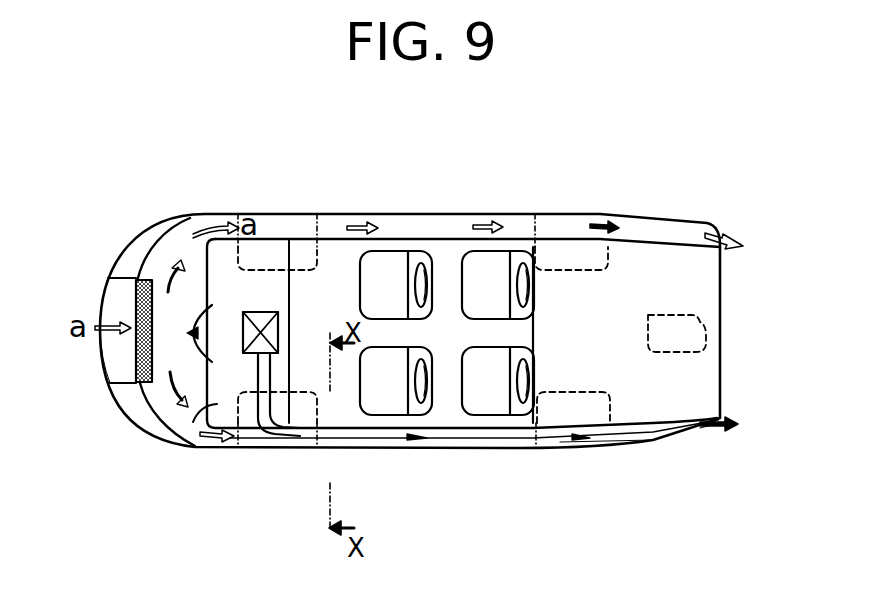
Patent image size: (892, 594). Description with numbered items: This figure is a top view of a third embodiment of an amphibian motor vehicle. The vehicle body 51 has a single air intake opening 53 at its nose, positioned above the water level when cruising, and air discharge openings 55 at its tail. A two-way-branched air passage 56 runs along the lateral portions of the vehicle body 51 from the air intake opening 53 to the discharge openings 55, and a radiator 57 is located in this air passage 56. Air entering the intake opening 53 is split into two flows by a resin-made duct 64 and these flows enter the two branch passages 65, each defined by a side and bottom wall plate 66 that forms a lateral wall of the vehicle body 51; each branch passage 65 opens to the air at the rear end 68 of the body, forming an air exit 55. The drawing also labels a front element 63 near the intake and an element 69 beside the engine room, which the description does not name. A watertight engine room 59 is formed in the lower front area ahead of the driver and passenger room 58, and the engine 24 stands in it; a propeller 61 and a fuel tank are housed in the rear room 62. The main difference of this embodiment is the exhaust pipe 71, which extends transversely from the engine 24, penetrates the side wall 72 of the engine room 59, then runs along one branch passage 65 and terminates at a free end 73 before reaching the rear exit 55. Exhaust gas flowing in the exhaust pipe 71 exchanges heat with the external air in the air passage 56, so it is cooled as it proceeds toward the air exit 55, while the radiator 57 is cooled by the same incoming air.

The engine 24 is at (242, 322).
The vehicle body 51 is at (590, 200).
The air intake opening 53 is at (110, 362).
The air discharge openings 55 is at (716, 232).
The air passage 56 is at (445, 462).
The radiator 57 is at (130, 412).
The driver and passenger room 58 is at (330, 277).
The engine room 59 is at (188, 440).
The propeller 61 is at (720, 318).
The rear room 62 is at (650, 413).
The front grille 63 is at (96, 293).
The duct 64 is at (157, 262).
The branch passages 65 is at (336, 228).
The side and bottom wall plate 66 is at (433, 217).
The rear end of vehicle body 68 is at (731, 352).
The blower 69 is at (206, 338).
The exhaust pipe 71 is at (307, 447).
The side wall 72 is at (255, 447).
The free end of exhaust pipe 73 is at (718, 428).